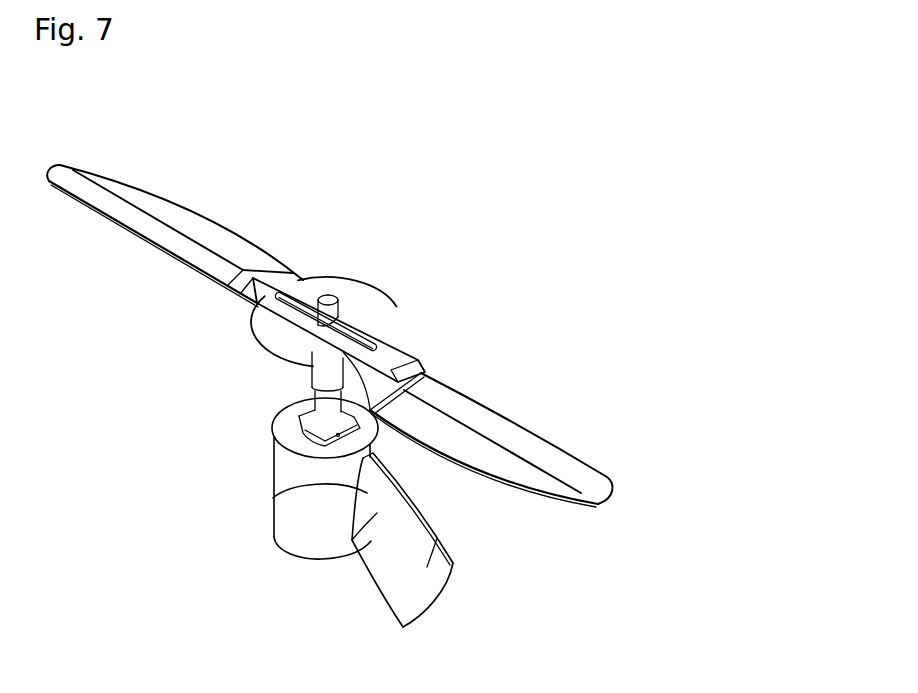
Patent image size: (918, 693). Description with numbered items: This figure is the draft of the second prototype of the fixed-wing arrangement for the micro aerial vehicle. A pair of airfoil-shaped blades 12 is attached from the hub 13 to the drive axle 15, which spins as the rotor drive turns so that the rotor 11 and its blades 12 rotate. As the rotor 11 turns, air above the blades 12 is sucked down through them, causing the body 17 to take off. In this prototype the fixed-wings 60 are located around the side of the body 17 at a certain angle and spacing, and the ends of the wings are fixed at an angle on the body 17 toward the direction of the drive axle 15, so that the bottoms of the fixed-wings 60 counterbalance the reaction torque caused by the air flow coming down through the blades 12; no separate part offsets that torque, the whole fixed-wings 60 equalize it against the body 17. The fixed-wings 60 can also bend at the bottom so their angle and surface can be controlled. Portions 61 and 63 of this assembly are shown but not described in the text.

The rotor 11 is at (186, 163).
The blades 12 is at (538, 440).
The hub 13 is at (372, 332).
The drive axle 15 is at (331, 410).
The body 17 is at (313, 525).
The fixed-wings 60 is at (387, 598).
The cylindrical housing 61 is at (290, 496).
The vane 63 is at (422, 602).